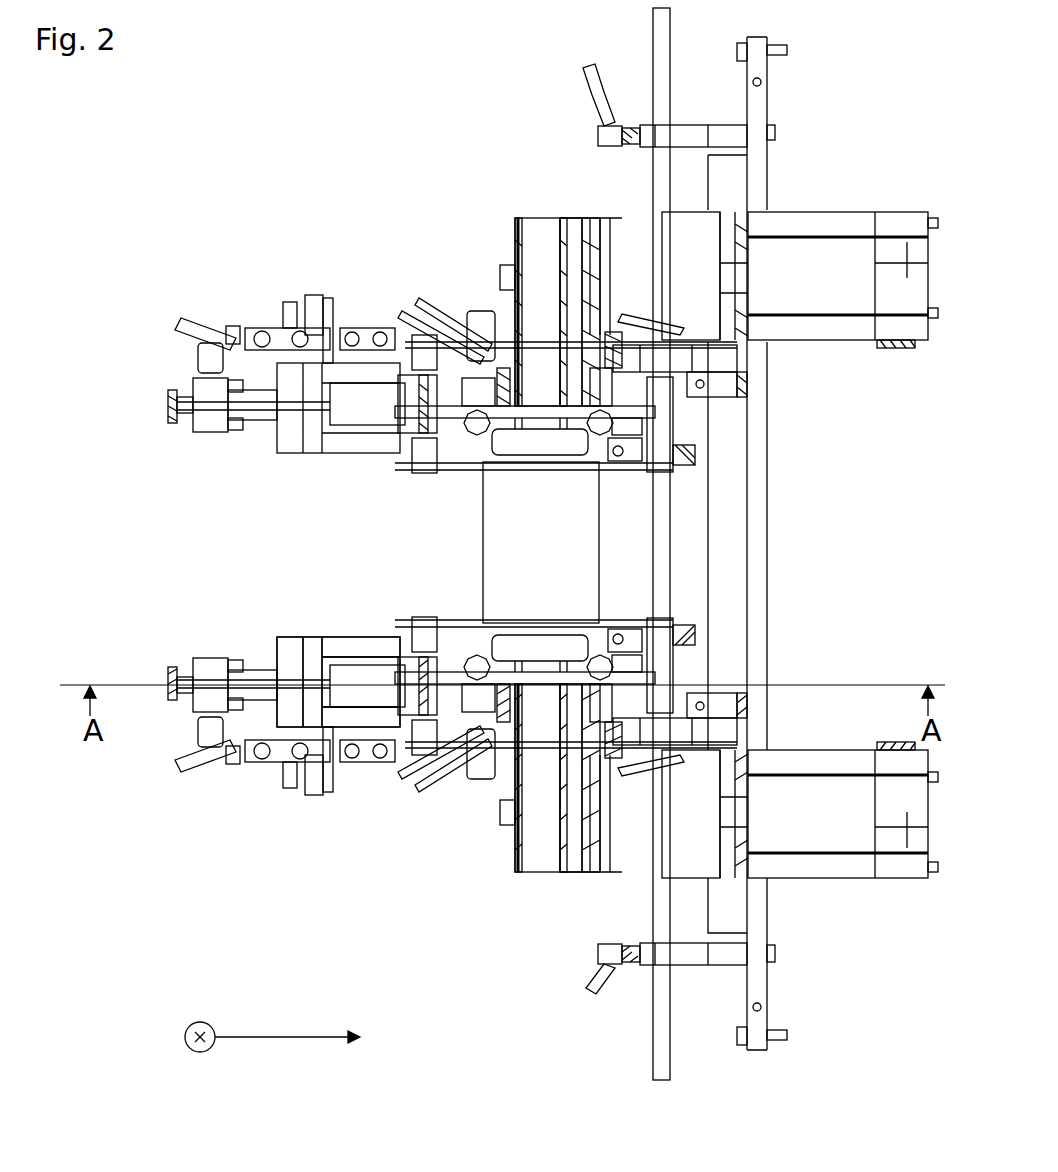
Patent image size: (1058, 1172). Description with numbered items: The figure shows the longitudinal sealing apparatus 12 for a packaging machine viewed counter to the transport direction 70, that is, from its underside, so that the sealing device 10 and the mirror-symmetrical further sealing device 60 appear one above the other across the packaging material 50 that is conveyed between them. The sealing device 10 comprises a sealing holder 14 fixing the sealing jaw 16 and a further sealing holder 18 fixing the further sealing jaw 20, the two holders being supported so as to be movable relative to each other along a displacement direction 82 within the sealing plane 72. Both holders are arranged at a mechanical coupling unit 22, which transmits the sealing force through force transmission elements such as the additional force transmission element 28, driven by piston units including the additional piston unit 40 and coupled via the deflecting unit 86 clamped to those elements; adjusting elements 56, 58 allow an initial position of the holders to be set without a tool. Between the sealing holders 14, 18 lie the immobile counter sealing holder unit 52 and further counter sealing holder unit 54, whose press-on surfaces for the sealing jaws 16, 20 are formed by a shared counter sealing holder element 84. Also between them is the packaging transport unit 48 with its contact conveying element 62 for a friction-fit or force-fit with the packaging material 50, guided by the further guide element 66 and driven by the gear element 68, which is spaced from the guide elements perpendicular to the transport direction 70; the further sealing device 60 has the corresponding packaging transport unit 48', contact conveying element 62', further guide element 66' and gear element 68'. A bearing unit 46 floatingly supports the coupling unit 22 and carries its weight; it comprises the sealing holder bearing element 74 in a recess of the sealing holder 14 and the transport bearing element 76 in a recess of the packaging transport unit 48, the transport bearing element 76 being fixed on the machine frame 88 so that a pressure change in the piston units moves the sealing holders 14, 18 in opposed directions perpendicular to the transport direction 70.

The sealing device 10 is at (157, 606).
The longitudinal sealing apparatus 12 is at (850, 570).
The sealing holder 14 is at (420, 625).
The sealing jaw 16 is at (470, 632).
The further sealing holder 18 is at (662, 640).
The further sealing jaw 20 is at (612, 640).
The coupling unit 22 is at (184, 668).
The additional force transmission element 28 is at (265, 668).
The additional piston unit 40 is at (345, 725).
The bearing unit 46 is at (420, 726).
The packaging transport unit 48 is at (499, 823).
The packaging material 50 is at (483, 500).
The counter sealing holder unit 52 is at (478, 732).
The further counter sealing holder unit 54 is at (628, 760).
The adjusting element 56 is at (243, 762).
The adjusting element 58 is at (185, 750).
The further sealing device 60 is at (345, 310).
The contact conveying element 62 is at (552, 818).
The further guide element 66 is at (454, 765).
The gear element 68 is at (465, 881).
The transport direction 70 is at (210, 1048).
The sealing plane 72 is at (855, 683).
The sealing holder bearing element 74 is at (352, 665).
The transport bearing element 76 is at (485, 764).
The displacement direction 82 is at (316, 1040).
The shared counter sealing holder element 84 is at (602, 620).
The deflecting unit 86 is at (213, 655).
The machine frame 88 is at (770, 488).
The packaging transport unit 48' is at (521, 229).
The contact conveying element 62' is at (548, 261).
The further guide element 66' is at (454, 308).
The gear element 68' is at (481, 201).